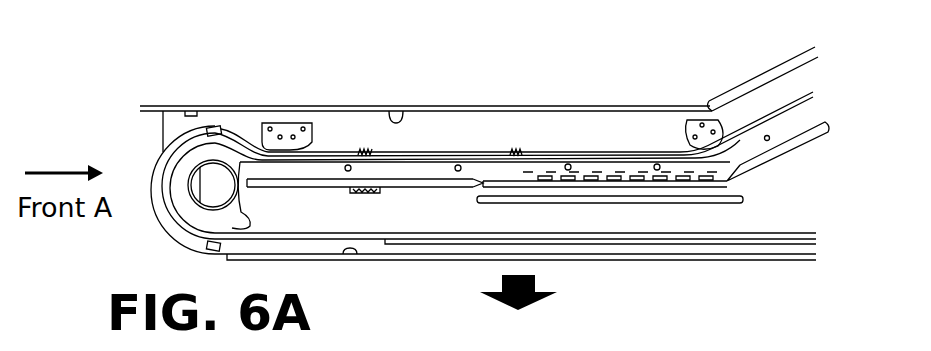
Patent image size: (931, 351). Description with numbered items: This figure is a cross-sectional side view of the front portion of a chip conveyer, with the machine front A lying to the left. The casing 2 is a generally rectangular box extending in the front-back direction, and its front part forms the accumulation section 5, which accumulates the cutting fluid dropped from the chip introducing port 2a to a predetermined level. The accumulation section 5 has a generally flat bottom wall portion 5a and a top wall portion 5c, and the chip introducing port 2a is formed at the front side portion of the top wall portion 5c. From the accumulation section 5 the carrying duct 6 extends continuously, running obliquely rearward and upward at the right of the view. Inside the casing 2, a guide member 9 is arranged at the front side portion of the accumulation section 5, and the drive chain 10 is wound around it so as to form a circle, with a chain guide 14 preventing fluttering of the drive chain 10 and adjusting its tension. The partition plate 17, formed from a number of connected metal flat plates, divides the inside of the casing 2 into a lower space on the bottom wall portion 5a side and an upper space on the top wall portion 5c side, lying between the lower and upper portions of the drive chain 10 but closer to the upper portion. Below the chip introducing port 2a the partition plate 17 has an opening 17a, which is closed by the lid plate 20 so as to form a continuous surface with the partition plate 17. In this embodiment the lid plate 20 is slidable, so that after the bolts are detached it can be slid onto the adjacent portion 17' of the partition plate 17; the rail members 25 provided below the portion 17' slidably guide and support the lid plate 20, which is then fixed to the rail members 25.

The casing 2 is at (671, 74).
The chip introducing port 2a is at (390, 118).
The accumulation section 5 is at (614, 100).
The bottom wall portion 5a is at (345, 255).
The top wall portion 5c is at (648, 107).
The carrying duct 6 is at (768, 72).
The guide member 9 is at (200, 208).
The drive chain 10 is at (488, 150).
The chain guide 14 is at (285, 123).
The partition plate 17 is at (790, 168).
The portion of the partition plate 17' is at (605, 116).
The opening 17a is at (478, 188).
The lid plate 20 is at (418, 188).
The rail member 25 is at (643, 203).